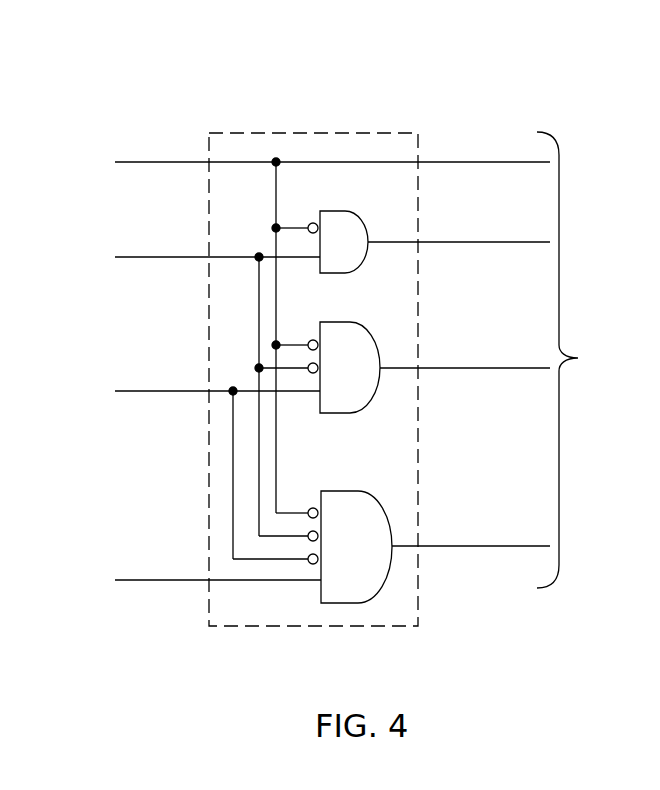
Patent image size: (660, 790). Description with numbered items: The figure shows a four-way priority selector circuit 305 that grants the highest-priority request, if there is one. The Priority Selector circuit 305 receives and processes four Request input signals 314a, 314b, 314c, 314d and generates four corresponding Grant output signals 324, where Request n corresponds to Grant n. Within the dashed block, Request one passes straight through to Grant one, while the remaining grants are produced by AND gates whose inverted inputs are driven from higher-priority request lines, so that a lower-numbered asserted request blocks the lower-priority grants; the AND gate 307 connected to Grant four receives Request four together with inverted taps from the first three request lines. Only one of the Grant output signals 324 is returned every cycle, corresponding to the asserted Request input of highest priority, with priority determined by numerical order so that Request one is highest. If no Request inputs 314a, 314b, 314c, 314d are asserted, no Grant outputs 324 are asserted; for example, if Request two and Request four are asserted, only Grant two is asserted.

The Priority Selector circuit 305 is at (333, 130).
The AND gate 307 is at (367, 587).
The Request input signal 314a is at (187, 162).
The Request input signal 314b is at (187, 257).
The Request input signal 314c is at (187, 391).
The Request input signal 314d is at (187, 580).
The Grant output signals 324 is at (501, 357).